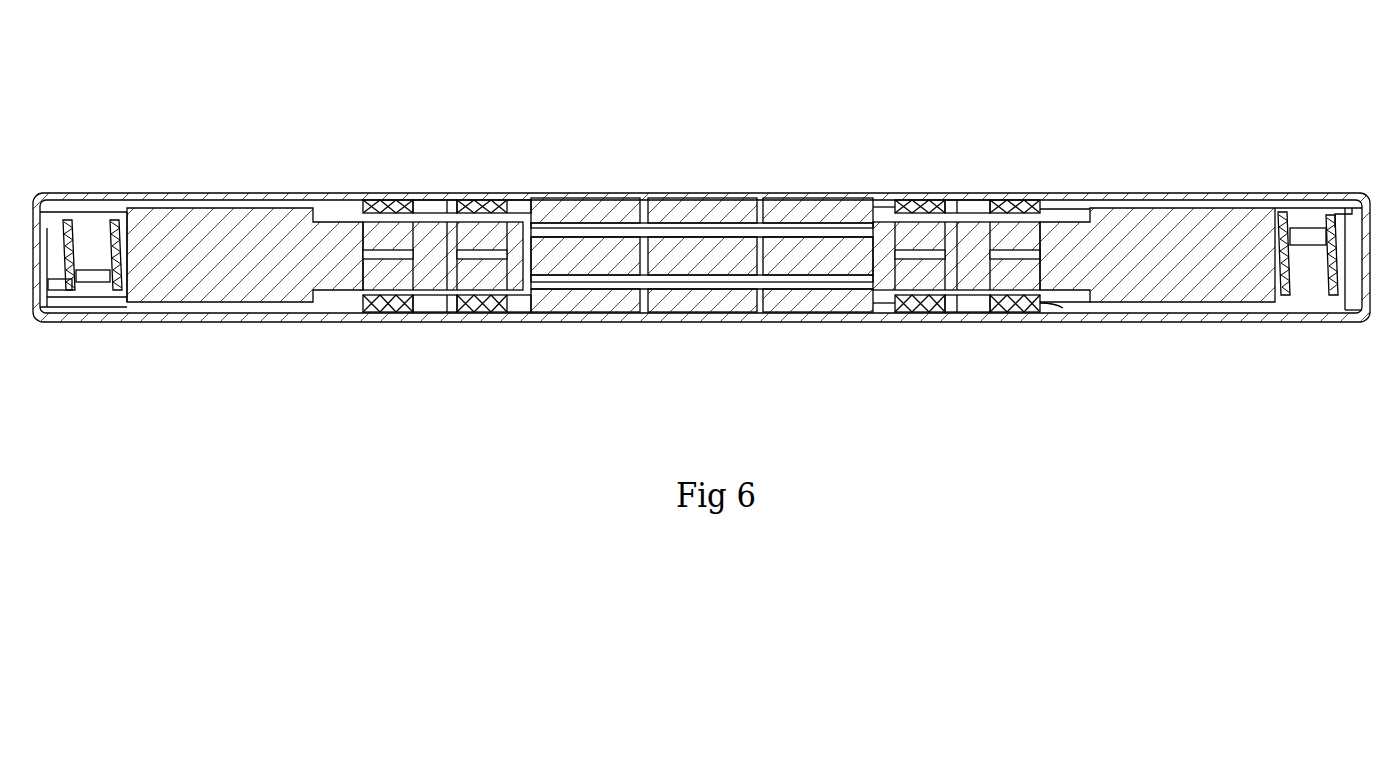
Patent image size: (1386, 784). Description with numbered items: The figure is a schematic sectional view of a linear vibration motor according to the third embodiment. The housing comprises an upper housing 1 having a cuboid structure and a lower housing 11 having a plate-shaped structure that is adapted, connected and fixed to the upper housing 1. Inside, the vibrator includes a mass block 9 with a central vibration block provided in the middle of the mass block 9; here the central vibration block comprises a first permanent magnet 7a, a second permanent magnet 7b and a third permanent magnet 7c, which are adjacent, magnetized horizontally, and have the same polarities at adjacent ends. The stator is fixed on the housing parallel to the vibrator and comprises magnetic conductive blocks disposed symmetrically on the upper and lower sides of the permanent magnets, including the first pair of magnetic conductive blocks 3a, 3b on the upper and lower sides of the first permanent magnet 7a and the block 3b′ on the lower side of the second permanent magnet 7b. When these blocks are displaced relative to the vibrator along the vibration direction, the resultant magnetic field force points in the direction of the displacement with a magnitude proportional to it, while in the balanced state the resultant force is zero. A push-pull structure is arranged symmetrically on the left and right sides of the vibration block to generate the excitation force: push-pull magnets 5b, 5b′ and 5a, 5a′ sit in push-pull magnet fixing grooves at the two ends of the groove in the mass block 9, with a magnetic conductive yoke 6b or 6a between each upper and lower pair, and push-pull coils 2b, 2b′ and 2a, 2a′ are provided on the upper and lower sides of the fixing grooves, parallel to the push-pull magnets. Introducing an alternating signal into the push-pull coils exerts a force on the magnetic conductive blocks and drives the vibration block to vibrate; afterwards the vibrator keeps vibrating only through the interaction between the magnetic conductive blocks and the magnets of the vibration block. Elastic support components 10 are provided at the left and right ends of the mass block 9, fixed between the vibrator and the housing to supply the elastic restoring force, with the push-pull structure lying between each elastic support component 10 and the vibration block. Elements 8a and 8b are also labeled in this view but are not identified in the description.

The upper housing 1 is at (1140, 205).
The elastic support component 10 is at (72, 210).
The mass block 9 is at (190, 210).
The push-pull magnet 5b is at (380, 245).
The magnetic conductive yoke 6b is at (415, 218).
The push-pull coil 2b is at (472, 226).
The first permanent magnet 7a is at (578, 240).
The magnetic conductive block 3a is at (602, 248).
The second permanent magnet 7b is at (707, 250).
The third permanent magnet 7c is at (802, 250).
The push-pull coil 2a is at (912, 212).
The push-pull magnet 5a is at (1002, 215).
The magnetic conductive yoke 6a is at (1035, 215).
The push-pull magnet 5b′ is at (397, 300).
The push-pull coil 2b′ is at (468, 300).
The magnetic conductive block 3b is at (562, 300).
The first middle block 8a is at (639, 285).
The magnetic conductance block 3b′ is at (700, 300).
The second middle block 8b is at (762, 285).
The push-pull coil 2a′ is at (912, 300).
The push-pull magnet 5a′ is at (1030, 305).
The lower housing 11 is at (1145, 305).